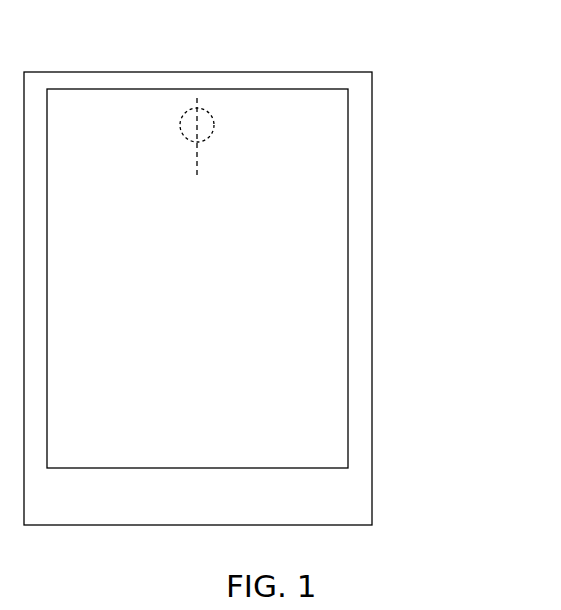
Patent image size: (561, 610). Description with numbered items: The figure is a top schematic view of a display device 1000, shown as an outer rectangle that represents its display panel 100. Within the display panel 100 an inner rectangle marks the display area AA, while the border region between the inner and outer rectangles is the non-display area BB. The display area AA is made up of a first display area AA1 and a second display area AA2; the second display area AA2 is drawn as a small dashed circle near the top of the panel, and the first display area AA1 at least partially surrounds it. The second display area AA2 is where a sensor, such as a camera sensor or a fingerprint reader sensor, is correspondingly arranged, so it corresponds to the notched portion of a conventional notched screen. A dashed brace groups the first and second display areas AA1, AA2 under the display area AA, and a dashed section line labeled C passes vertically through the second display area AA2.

The display device 1000 is at (374, 36).
The display panel 100 is at (372, 72).
The display area AA is at (461, 122).
The first display area AA1 is at (327, 187).
The second display area AA2 is at (210, 122).
The non-display area BB is at (360, 227).
The section line C- C is at (187, 128).